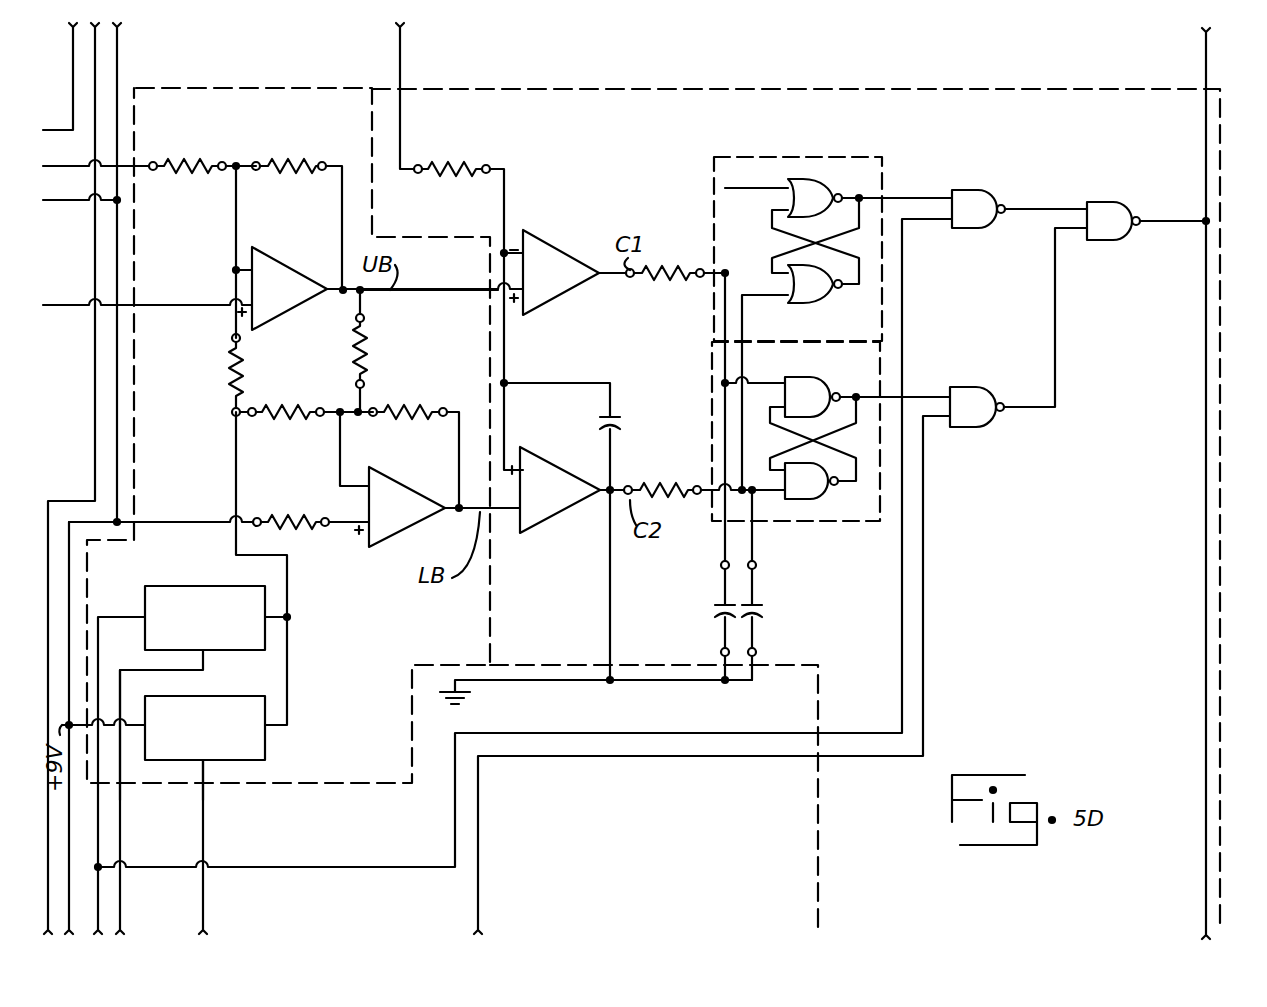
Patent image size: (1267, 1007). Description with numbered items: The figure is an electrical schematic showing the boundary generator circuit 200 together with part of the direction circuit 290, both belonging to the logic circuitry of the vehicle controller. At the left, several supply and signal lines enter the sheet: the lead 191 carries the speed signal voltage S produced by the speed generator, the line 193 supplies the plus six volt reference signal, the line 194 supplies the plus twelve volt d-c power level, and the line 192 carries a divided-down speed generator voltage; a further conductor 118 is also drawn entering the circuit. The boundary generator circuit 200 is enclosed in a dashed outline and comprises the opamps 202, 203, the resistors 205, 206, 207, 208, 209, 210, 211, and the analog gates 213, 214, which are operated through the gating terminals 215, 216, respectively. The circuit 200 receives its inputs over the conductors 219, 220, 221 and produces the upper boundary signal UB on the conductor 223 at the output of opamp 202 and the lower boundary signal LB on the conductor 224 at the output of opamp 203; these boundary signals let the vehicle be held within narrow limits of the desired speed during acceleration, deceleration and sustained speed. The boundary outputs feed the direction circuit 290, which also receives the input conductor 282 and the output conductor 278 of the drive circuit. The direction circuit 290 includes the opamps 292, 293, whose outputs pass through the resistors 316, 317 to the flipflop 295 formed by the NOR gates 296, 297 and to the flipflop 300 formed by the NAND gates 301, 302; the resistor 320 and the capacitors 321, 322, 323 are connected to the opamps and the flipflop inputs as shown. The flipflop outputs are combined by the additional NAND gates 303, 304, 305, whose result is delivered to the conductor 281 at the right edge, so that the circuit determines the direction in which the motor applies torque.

The conductor line 118 is at (93, 482).
The lead 191 is at (45, 130).
The line 192 is at (212, 305).
The line 193 is at (48, 170).
The line 194 is at (120, 72).
The boundary generator circuit 200 is at (325, 90).
The opamp 202 is at (291, 263).
The opamp 203 is at (412, 486).
The resistor 205 is at (186, 160).
The resistor 206 is at (298, 160).
The resistor 207 is at (242, 390).
The resistor 208 is at (285, 418).
The resistor 209 is at (364, 350).
The resistor 210 is at (420, 406).
The resistor 211 is at (305, 518).
The analog gate 213 is at (200, 572).
The analog gate 214 is at (242, 700).
The gating terminal 215 is at (203, 656).
The gating terminal 216 is at (203, 765).
The conductor 219 is at (98, 878).
The conductor 220 is at (120, 838).
The conductor 221 is at (203, 820).
The conductor 223 is at (442, 275).
The conductor 224 is at (470, 512).
The output conductor 278 is at (400, 55).
The input conductor 281 is at (1206, 920).
The input conductor 282 is at (478, 912).
The direction circuit 290 is at (610, 89).
The opamp 292 is at (570, 246).
The opamp 293 is at (548, 458).
The flipflop 295 is at (836, 157).
The NOR gate 296 is at (796, 184).
The NOR gate 297 is at (801, 305).
The flipflop 300 is at (777, 522).
The NAND gate 301 is at (796, 377).
The NAND gate 302 is at (812, 500).
The NAND gate 303 is at (963, 190).
The NAND gate 304 is at (973, 387).
The NAND gate 305 is at (1112, 202).
The resistor 316 is at (686, 270).
The resistor 317 is at (666, 486).
The resistor 320 is at (470, 162).
The capacitor 321 is at (618, 415).
The capacitor 322 is at (716, 608).
The capacitor 323 is at (762, 608).